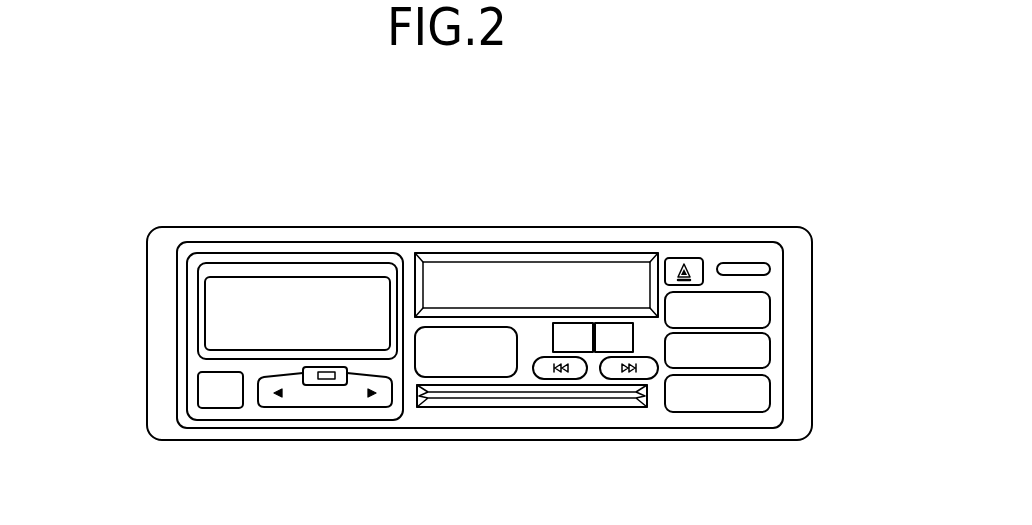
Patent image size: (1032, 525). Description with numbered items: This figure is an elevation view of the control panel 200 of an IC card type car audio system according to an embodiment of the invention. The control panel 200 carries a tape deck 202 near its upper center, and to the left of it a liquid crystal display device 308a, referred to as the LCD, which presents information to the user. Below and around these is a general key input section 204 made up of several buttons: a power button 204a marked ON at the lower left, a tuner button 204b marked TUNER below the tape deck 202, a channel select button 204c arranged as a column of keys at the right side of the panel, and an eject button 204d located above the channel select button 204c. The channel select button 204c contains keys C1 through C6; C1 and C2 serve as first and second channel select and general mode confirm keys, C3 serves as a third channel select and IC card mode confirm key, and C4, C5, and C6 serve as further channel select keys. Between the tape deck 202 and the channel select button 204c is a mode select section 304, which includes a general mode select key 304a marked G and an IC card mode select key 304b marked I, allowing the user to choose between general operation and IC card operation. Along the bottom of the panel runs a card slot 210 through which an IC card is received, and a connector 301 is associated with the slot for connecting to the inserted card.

The control panel 200 is at (155, 363).
The tape deck 202 is at (462, 258).
The general key input section 204 is at (795, 391).
The power button 204a is at (218, 404).
The tuner button 204b is at (470, 374).
The channel select button 204c is at (765, 348).
The eject button 204d is at (697, 261).
The card slot 210 is at (496, 444).
The connector 301 is at (418, 394).
The mode select section 304 is at (578, 240).
The general mode select key 304a is at (558, 323).
The IC card mode select key 304b is at (600, 330).
The liquid crystal display device 308a is at (217, 298).